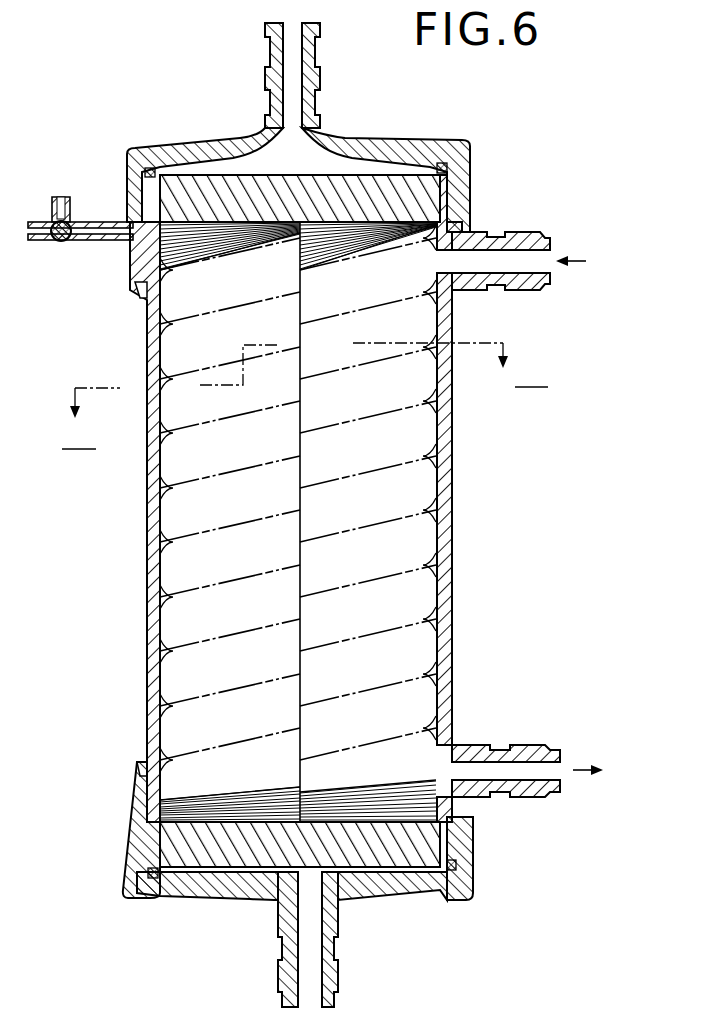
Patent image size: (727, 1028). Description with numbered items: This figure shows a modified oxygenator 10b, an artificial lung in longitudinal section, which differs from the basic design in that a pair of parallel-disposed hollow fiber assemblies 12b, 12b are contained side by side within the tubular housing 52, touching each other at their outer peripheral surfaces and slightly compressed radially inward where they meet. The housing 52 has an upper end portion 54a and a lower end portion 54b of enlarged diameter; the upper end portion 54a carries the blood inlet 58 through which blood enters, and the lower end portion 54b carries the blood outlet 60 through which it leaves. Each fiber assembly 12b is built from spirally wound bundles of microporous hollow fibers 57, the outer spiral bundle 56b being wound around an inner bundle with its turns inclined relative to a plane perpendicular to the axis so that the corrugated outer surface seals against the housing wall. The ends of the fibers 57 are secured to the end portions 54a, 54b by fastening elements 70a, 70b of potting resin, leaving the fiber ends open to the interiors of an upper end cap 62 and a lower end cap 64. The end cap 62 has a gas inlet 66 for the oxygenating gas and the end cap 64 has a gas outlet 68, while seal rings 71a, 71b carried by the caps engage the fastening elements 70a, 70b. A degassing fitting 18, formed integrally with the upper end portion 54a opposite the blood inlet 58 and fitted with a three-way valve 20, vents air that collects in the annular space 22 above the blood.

The modified oxygenator 10b is at (172, 127).
The hollow fiber assembly 12b is at (170, 548).
The degassing fitting 18 is at (112, 222).
The three-way valve 20 is at (56, 243).
The annular space 22 is at (166, 236).
The tubular housing 52 is at (455, 418).
The upper end portion 54a is at (136, 284).
The lower end portion 54b is at (138, 768).
The outer spiral bundle 56b is at (173, 510).
The hollow fibers 57 is at (223, 793).
The blood inlet 58 is at (546, 232).
The blood outlet 60 is at (556, 799).
The upper end cap 62 is at (331, 133).
The lower end cap 64 is at (346, 905).
The gas inlet 66 is at (326, 36).
The gas outlet 68 is at (338, 1000).
The upper fastening element 70a is at (382, 173).
The lower fastening element 70b is at (142, 825).
The upper seal ring 71a is at (444, 163).
The lower seal ring 71b is at (136, 878).